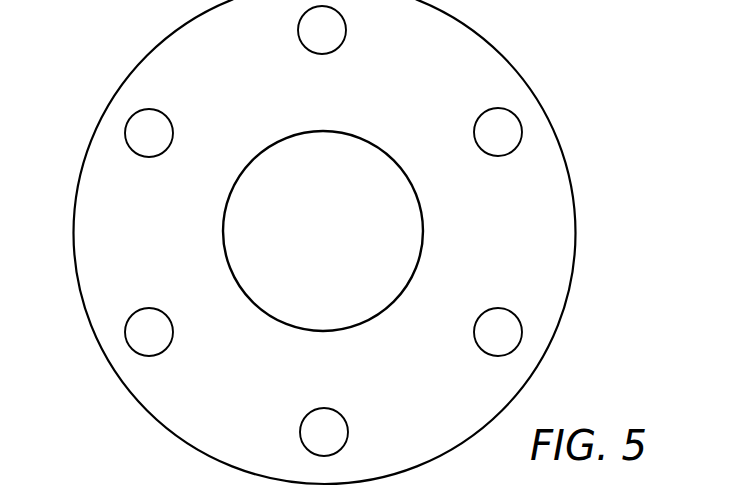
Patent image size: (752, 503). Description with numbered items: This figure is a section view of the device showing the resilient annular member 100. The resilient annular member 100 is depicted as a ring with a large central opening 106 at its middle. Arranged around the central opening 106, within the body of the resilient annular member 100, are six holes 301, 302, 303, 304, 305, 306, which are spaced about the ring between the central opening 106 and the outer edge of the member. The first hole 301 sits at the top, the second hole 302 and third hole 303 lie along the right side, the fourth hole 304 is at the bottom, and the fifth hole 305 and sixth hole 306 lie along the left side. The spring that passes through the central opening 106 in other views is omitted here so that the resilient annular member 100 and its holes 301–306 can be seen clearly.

The resilient annular member 100 is at (562, 267).
The central opening 106 is at (412, 230).
The hole 301 is at (332, 30).
The hole 302 is at (502, 128).
The hole 303 is at (512, 333).
The hole 304 is at (333, 432).
The hole 305 is at (133, 335).
The hole 306 is at (140, 125).